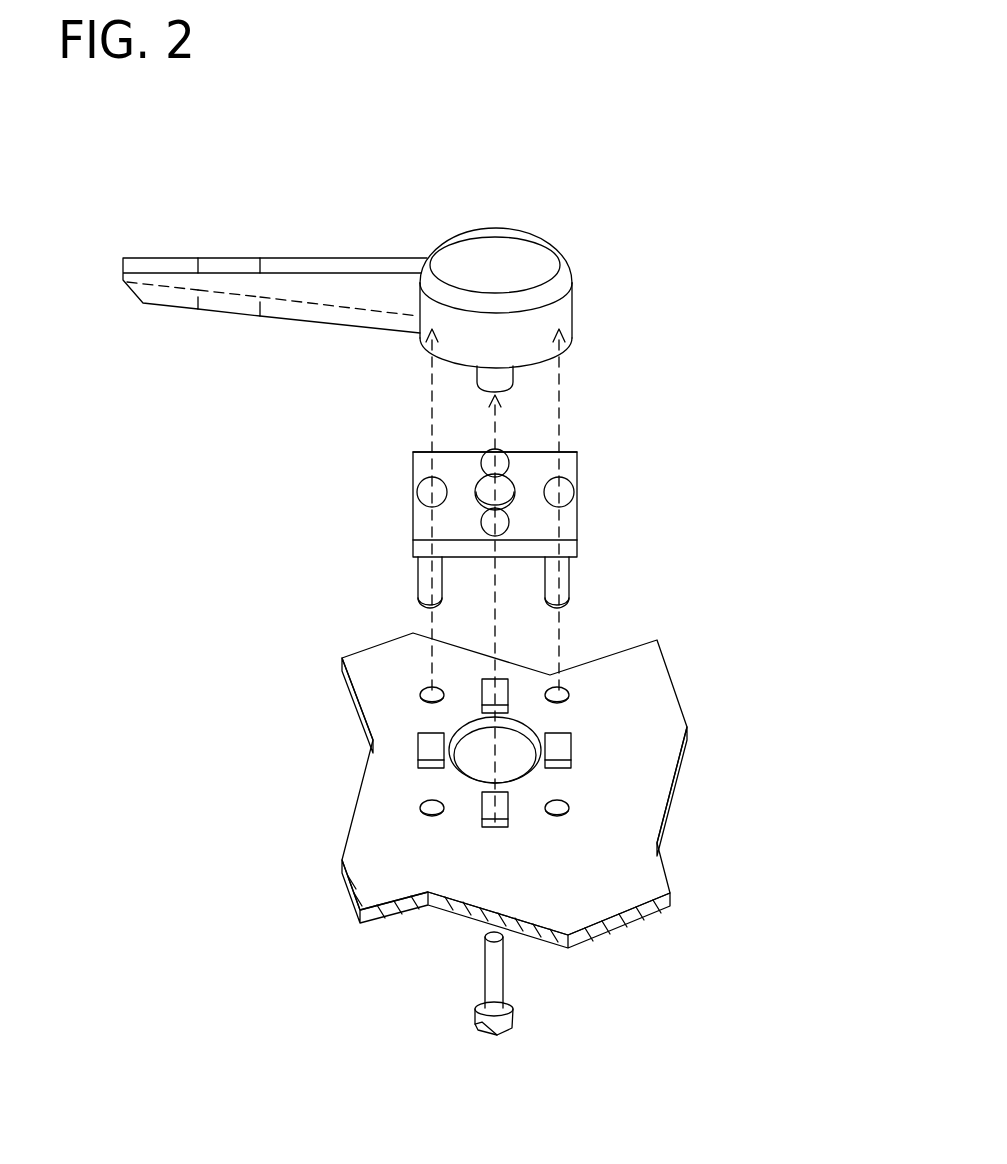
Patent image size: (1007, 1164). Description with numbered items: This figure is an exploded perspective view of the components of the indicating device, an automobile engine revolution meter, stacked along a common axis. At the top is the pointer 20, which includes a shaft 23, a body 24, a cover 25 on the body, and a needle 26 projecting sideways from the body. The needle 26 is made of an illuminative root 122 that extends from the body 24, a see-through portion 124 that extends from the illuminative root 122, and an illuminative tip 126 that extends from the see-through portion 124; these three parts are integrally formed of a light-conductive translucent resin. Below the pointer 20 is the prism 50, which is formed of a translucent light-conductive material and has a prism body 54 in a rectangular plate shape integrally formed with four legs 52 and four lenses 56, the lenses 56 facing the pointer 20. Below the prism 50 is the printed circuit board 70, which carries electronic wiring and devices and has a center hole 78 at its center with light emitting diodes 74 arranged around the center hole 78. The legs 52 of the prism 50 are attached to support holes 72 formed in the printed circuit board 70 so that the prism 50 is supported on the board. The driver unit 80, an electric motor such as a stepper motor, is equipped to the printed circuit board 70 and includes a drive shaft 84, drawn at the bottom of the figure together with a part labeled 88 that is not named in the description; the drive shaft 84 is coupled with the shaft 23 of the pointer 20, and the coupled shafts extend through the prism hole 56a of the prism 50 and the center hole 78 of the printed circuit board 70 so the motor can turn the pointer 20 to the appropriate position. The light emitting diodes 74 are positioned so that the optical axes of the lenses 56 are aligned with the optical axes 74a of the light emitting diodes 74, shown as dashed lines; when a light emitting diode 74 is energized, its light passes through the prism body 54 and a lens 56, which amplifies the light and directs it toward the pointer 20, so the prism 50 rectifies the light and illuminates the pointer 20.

The pointer 20 is at (556, 222).
The shaft 23 is at (514, 381).
The body 24 is at (582, 292).
The cover 25 is at (557, 252).
The needle 26 is at (293, 236).
The prism 50 is at (583, 532).
The legs 52 is at (417, 578).
The prism body 54 is at (480, 461).
The lenses 56 is at (559, 452).
The prism hole 56a is at (513, 488).
The printed circuit board 70 is at (709, 900).
The support holes 72 is at (419, 694).
The light emitting diodes 74 is at (512, 692).
The optical axes 74a is at (430, 393).
The center hole 78 is at (538, 728).
The driver unit 80 is at (572, 998).
The drive shaft 84 is at (515, 1013).
The fastener shaft 88 is at (505, 948).
The illuminative root 122 is at (323, 323).
The see-through portion 124 is at (227, 311).
The illuminative tip 126 is at (141, 306).